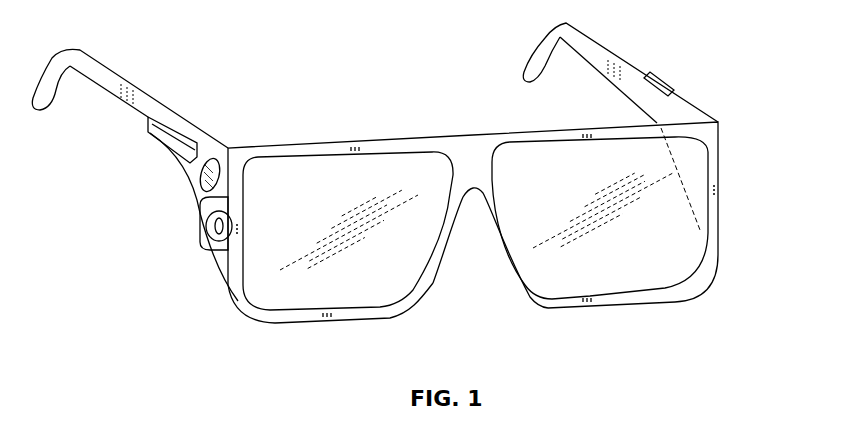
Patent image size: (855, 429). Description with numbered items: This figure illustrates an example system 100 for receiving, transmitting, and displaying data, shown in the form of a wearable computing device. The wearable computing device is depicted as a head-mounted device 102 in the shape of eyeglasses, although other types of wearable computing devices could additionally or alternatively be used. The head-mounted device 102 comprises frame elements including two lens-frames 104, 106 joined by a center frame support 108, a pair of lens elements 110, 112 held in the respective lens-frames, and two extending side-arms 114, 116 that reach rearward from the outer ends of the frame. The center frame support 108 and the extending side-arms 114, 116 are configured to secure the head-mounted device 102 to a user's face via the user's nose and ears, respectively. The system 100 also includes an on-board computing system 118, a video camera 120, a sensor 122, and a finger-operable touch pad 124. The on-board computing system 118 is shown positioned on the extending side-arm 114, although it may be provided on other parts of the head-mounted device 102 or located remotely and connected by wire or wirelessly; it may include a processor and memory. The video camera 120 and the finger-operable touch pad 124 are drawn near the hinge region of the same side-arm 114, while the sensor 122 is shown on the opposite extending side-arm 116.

The system 100 is at (728, 289).
The head-mounted device 102 is at (331, 35).
The lens-frame 104 is at (315, 153).
The lens-frame 106 is at (553, 139).
The center frame support 108 is at (473, 155).
The lens element 110 is at (347, 298).
The lens element 112 is at (603, 280).
The extending side-arm 114 is at (167, 113).
The extending side-arm 116 is at (618, 53).
The on-board computing system 118 is at (165, 135).
The video camera 120 is at (200, 220).
The sensor 122 is at (663, 82).
The finger-operable touch pad 124 is at (197, 178).